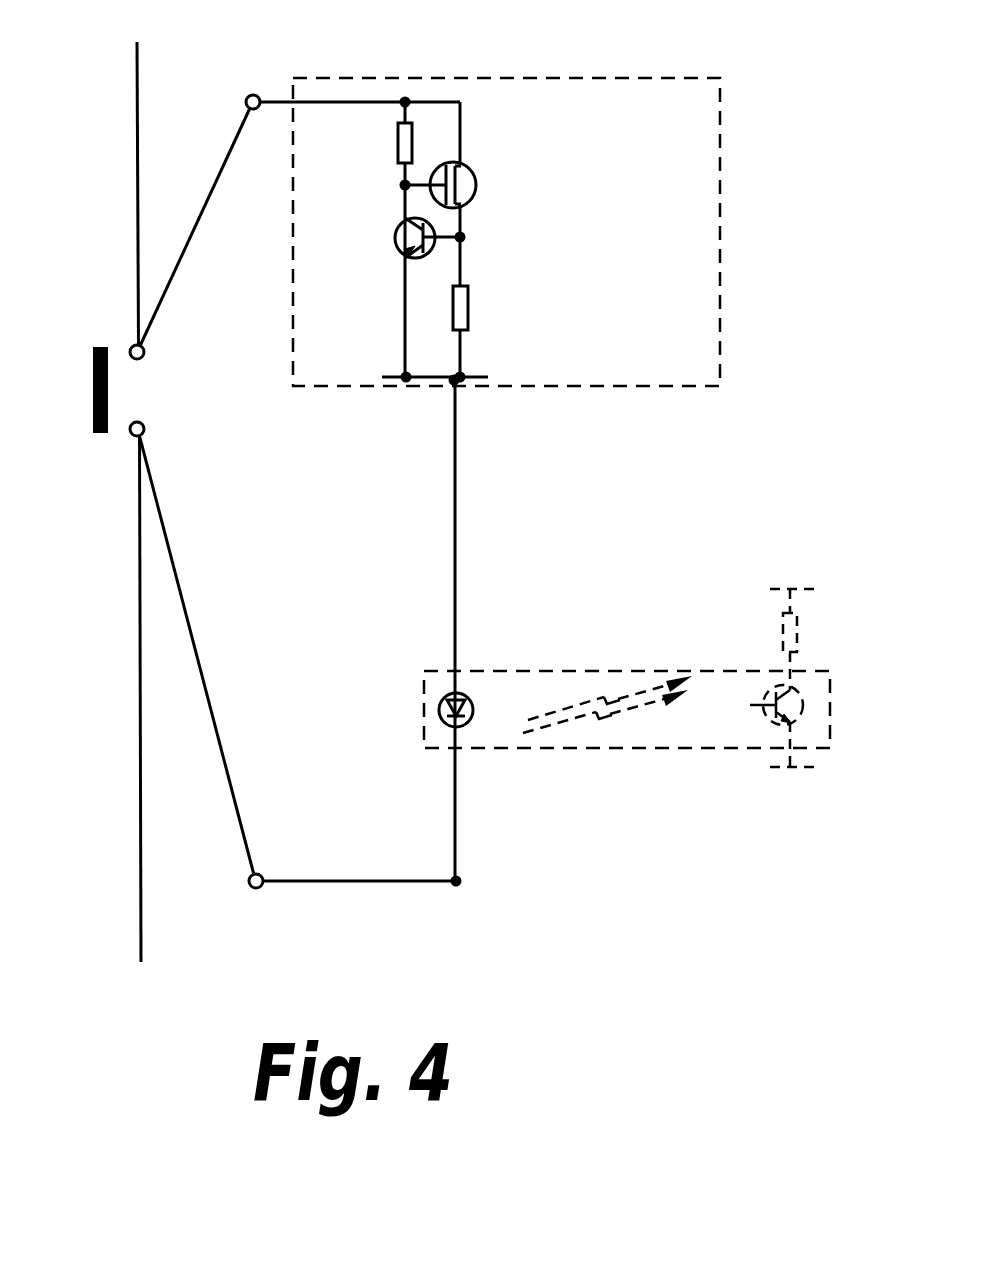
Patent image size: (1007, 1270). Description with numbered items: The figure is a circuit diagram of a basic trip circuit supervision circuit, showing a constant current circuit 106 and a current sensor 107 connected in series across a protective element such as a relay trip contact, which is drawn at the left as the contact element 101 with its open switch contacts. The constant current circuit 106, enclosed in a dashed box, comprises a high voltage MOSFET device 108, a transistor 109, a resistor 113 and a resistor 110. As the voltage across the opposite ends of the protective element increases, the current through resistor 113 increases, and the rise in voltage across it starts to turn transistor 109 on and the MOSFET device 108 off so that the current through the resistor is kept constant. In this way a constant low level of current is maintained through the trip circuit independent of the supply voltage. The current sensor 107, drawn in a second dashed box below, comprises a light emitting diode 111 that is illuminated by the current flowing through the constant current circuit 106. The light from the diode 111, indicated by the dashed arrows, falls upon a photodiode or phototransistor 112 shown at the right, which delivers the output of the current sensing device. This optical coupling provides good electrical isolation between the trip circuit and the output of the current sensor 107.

The permanent magnet 101 is at (93, 390).
The constant current circuit 106 is at (722, 225).
The current sensor 107 is at (692, 748).
The high voltage MOSFET device 108 is at (476, 188).
The transistor 109 is at (400, 249).
The resistor 110 is at (400, 148).
The light emitting diode 111 is at (447, 726).
The phototransistor 112 is at (800, 722).
The resistor 113 is at (468, 311).